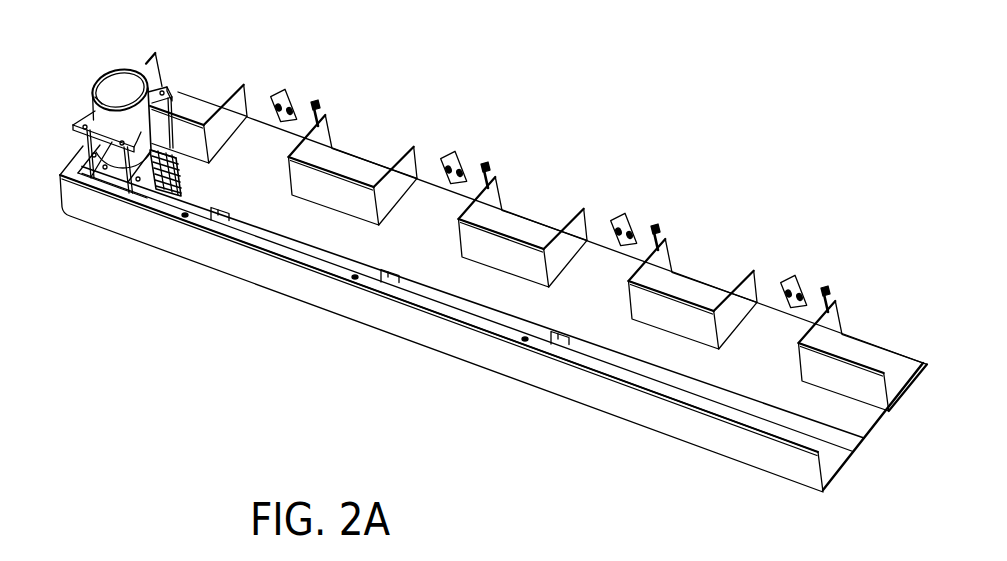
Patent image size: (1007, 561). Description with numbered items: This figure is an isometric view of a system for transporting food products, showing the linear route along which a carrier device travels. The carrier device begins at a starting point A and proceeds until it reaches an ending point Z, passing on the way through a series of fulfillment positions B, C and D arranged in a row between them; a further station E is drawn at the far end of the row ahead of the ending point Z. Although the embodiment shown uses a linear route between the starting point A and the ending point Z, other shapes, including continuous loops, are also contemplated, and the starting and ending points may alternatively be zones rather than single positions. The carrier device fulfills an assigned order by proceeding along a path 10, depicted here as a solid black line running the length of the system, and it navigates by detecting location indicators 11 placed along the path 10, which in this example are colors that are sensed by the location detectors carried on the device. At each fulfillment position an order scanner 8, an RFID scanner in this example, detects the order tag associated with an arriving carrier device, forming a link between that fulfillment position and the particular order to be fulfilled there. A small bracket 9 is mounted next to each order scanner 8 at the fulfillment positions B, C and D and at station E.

The starting point A is at (76, 156).
The fulfillment position B is at (259, 149).
The fulfillment position C is at (429, 211).
The fulfillment position D is at (597, 271).
The fifth station E is at (767, 334).
The ending point Z is at (877, 456).
The order scanner 8 is at (289, 99).
The bracket 9 is at (319, 105).
The path 10 is at (827, 427).
The location indicator 11 is at (217, 217).